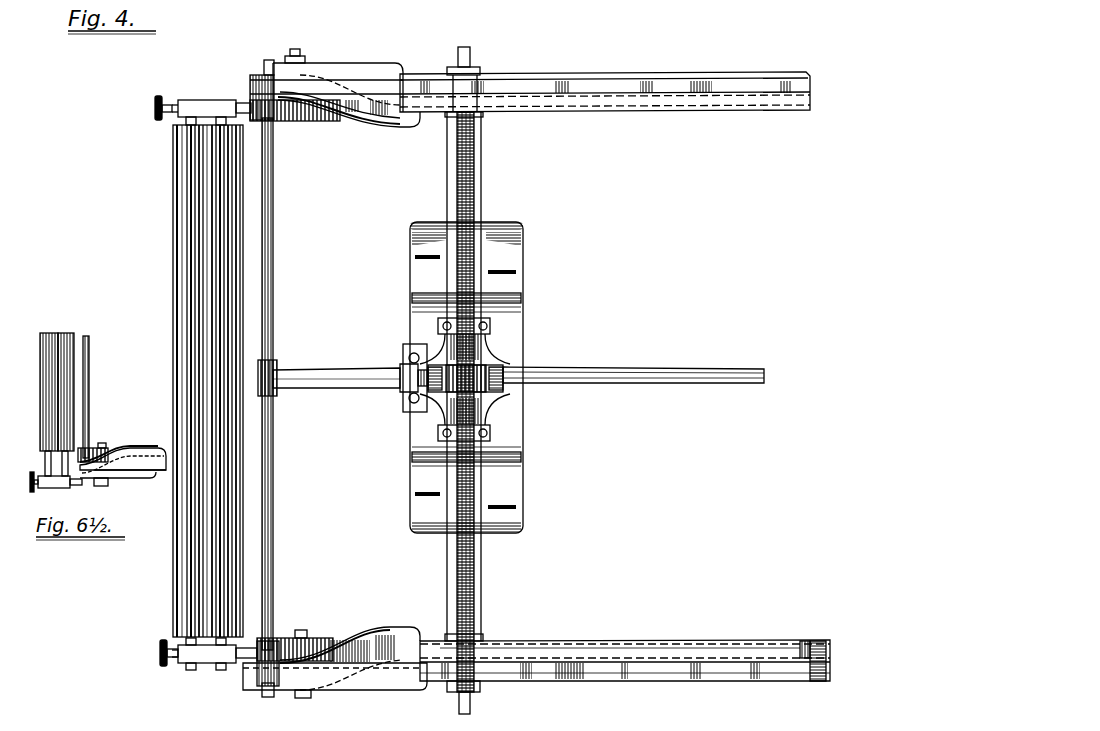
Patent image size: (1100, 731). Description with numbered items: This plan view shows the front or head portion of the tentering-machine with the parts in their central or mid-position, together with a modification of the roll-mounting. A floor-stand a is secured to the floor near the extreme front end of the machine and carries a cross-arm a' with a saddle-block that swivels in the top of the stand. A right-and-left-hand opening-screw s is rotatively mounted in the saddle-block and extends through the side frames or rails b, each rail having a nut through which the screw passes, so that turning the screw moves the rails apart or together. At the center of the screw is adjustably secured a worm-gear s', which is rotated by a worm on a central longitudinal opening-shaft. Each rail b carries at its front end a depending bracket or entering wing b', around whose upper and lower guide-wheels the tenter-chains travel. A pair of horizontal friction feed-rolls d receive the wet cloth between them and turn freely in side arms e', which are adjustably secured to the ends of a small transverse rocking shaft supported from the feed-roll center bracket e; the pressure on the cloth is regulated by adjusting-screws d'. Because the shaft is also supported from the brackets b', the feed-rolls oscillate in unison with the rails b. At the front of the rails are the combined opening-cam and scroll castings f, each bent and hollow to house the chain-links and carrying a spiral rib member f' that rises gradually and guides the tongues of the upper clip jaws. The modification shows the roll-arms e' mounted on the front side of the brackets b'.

In FIG. 4, the floor-stand a is at (484, 377).
In FIG. 4, the cross-arm a' is at (485, 402).
In FIG. 4, the side frames or rails b is at (615, 375).
In FIG. 4, the depending bracket or entering wing b' is at (335, 378).
The depending bracket or entering wing b' is at (104, 493).
In FIG. 4, the friction feed-rolls d is at (191, 381).
The friction feed-rolls d is at (57, 389).
In FIG. 4, the adjusting-screws d' is at (151, 377).
In FIG. 4, the feed-roll center bracket e is at (350, 378).
In FIG. 4, the side arms e' is at (214, 380).
The side arms e' is at (56, 489).
In FIG. 4, the combined opening-cam and scroll f is at (340, 382).
The combined opening-cam and scroll f is at (123, 478).
In FIG. 4, the spiral or scroll-shaped rib member f' is at (349, 380).
The spiral or scroll-shaped rib member f' is at (123, 449).
In FIG. 4, the right-and-left-hand opening-screw s is at (481, 134).
In FIG. 4, the worm-gear s' is at (484, 392).